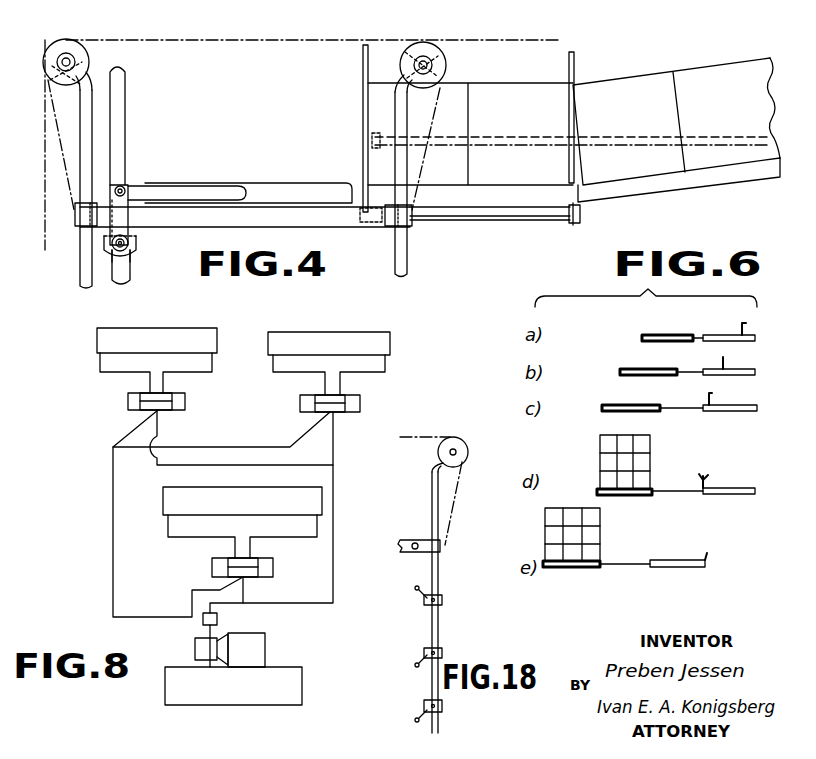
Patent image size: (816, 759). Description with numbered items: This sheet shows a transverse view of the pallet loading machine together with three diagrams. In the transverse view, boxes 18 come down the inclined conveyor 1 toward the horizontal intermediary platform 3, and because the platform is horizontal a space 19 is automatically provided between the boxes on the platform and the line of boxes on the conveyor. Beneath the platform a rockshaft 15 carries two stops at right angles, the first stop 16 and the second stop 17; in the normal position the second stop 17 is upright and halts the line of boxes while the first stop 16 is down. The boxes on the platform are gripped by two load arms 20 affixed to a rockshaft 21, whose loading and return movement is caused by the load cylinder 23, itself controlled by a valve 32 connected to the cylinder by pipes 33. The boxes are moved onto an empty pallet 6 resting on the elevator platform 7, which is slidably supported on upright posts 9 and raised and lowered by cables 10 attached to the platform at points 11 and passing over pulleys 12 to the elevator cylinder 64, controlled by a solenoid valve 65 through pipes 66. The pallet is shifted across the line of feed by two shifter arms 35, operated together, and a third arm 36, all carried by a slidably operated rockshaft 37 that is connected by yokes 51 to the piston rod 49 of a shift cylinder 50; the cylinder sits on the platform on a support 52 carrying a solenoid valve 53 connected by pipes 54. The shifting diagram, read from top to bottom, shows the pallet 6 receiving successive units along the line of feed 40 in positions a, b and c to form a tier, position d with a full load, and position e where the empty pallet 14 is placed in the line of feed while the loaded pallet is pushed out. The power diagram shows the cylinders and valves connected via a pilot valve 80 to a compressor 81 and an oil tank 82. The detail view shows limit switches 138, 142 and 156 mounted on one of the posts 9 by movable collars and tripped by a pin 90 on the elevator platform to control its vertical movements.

In FIG. 4, the inclined conveyor 1 is at (742, 178).
In FIG. 4, the intermediary platform 3 is at (480, 200).
In FIG. 4, the pallet 6 is at (278, 192).
In FIG. 6, the pallet 6 is at (657, 342).
In FIG. 4, the elevator platform 7 is at (188, 210).
In FIG. 18, the elevator platform 7 is at (400, 542).
In FIG. 4, the upright posts 9 is at (78, 278).
In FIG. 18, the upright posts 9 is at (432, 494).
In FIG. 4, the cables 10 is at (326, 40).
In FIG. 4, the attachment points 11 is at (72, 217).
In FIG. 18, the attachment points 11 is at (457, 490).
In FIG. 4, the pulleys 12 is at (66, 42).
In FIG. 18, the pulleys 12 is at (466, 434).
In FIG. 6, the empty pallet 14 is at (762, 350).
In FIG. 4, the rockshaft 15 is at (545, 220).
In FIG. 4, the first stop 16 is at (578, 222).
In FIG. 4, the second stop 17 is at (364, 178).
In FIG. 4, the boxes 18 is at (574, 121).
In FIG. 4, the space 19 is at (573, 162).
In FIG. 4, the load arms 20 is at (363, 64).
In FIG. 4, the rockshaft 21 is at (614, 140).
In FIG. 8, the load cylinder 23 is at (392, 346).
In FIG. 8, the valve 32 is at (360, 405).
In FIG. 8, the pipes 33 is at (385, 376).
In FIG. 4, the shifter arms 35 is at (170, 192).
In FIG. 6, the shifter arms 35 is at (642, 338).
In FIG. 4, the third shifter arm 36 is at (124, 104).
In FIG. 6, the third shifter arm 36 is at (747, 325).
In FIG. 4, the rockshaft 37 is at (124, 188).
In FIG. 6, the rockshaft 37 is at (680, 412).
In FIG. 6, the line of feed 40 is at (653, 315).
In FIG. 4, the piston rod 49 is at (132, 250).
In FIG. 4, the shift cylinder 50 is at (120, 262).
In FIG. 8, the shift cylinder 50 is at (100, 346).
In FIG. 4, the yokes 51 is at (128, 213).
In FIG. 4, the support 52 is at (135, 238).
In FIG. 4, the solenoid valve 53 is at (126, 272).
In FIG. 8, the solenoid valve 53 is at (128, 403).
In FIG. 8, the pipes 54 is at (100, 370).
In FIG. 8, the elevator cylinder 64 is at (242, 501).
In FIG. 8, the solenoid valve 65 is at (273, 567).
In FIG. 8, the pipes 66 is at (184, 538).
In FIG. 8, the pilot valve 80 is at (217, 618).
In FIG. 8, the compressor 81 is at (230, 650).
In FIG. 8, the oil tank 82 is at (233, 686).
In FIG. 18, the pin 90 is at (412, 552).
In FIG. 18, the limit switch 138 is at (419, 597).
In FIG. 18, the limit switch 142 is at (422, 657).
In FIG. 18, the limit switch 156 is at (422, 713).